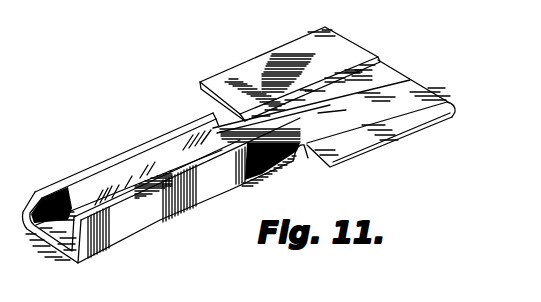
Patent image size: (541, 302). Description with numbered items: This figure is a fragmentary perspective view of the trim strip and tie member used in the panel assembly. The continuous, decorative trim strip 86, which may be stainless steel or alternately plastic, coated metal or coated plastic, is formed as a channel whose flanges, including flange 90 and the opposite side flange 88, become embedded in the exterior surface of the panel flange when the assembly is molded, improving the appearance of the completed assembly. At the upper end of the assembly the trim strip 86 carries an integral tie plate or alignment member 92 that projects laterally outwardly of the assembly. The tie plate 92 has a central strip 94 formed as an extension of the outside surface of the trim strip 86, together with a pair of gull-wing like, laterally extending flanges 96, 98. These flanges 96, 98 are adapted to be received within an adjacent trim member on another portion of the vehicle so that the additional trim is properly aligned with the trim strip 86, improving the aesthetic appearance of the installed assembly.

The trim strip 86 is at (57, 249).
The far side wall 88 is at (130, 152).
The flange 90 is at (183, 214).
The tie plate 92 is at (407, 74).
The central strip 94 is at (332, 104).
The laterally extending flange 96 is at (273, 58).
The laterally extending flange 98 is at (395, 141).